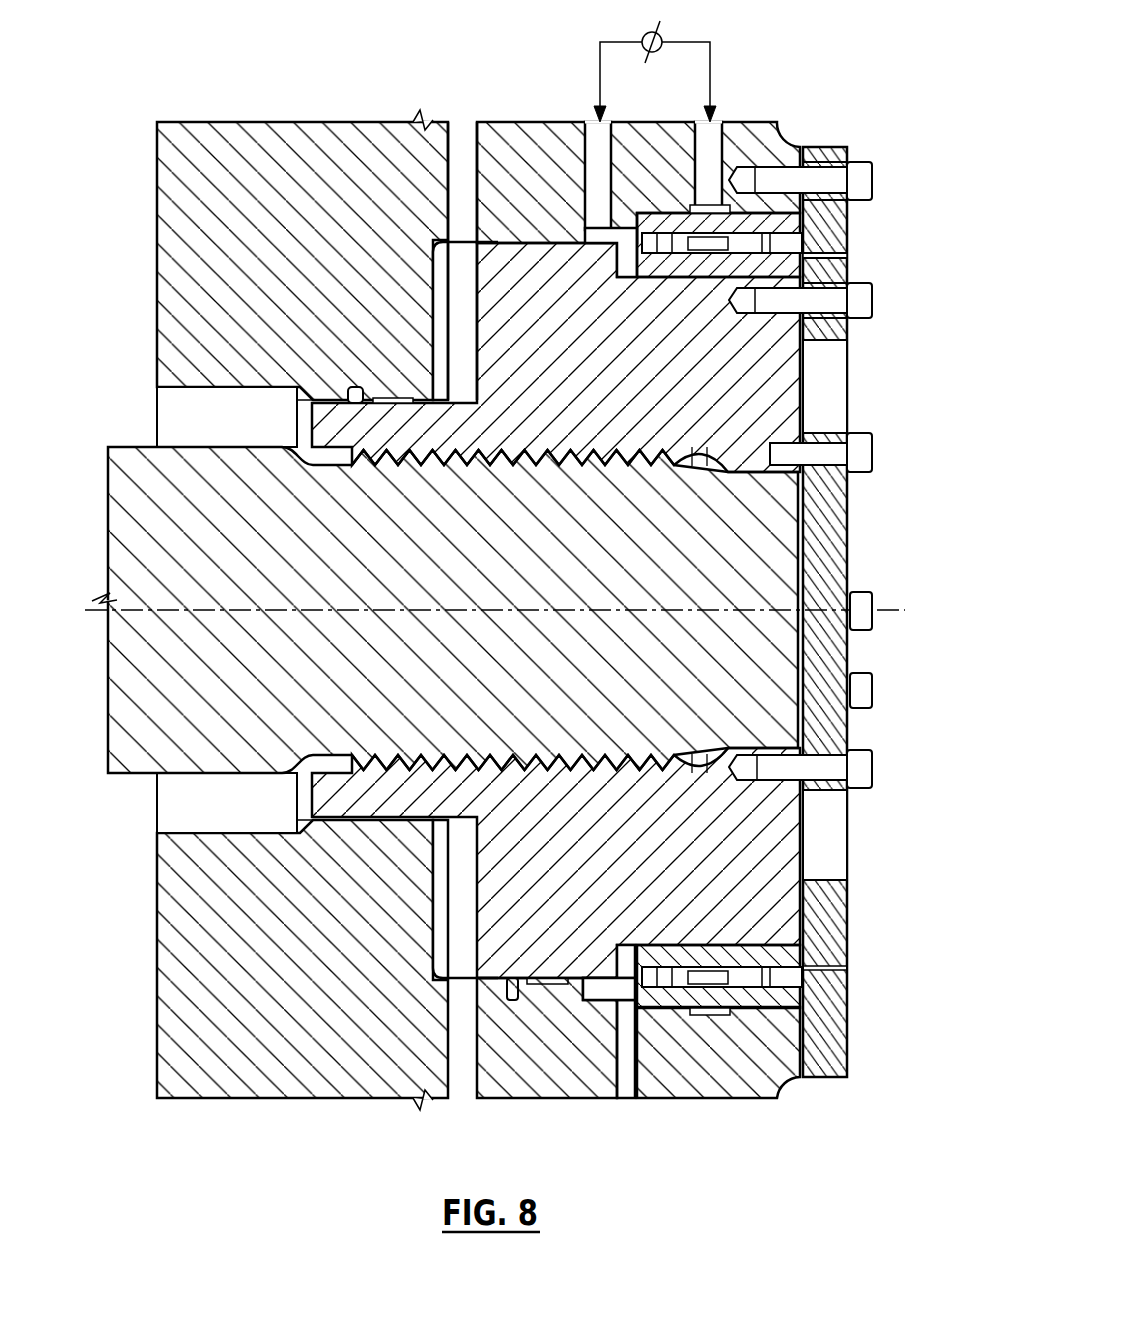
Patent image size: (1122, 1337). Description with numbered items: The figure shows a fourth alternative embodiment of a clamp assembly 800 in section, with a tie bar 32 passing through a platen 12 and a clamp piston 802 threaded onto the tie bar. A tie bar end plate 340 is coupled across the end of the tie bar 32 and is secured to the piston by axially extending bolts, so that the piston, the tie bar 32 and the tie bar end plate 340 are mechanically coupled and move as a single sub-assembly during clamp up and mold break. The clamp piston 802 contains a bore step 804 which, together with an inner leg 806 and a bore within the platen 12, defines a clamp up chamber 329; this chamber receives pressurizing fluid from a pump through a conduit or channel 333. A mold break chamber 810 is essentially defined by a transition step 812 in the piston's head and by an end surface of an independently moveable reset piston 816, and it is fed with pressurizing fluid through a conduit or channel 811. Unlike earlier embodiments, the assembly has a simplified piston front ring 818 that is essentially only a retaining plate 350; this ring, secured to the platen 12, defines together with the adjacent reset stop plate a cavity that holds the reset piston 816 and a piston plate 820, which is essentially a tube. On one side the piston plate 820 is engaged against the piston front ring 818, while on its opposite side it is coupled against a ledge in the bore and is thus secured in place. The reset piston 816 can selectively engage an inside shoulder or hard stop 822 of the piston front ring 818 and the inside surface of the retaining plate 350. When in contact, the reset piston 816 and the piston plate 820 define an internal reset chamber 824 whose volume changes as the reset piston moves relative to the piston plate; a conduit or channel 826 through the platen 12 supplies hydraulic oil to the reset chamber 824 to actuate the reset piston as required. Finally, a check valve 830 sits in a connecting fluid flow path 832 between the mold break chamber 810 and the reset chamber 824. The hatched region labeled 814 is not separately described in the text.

The clamp assembly 800 is at (496, 587).
The platen 12 is at (282, 1082).
The tie bar 32 is at (130, 638).
The clamp up chamber 329 is at (462, 282).
The conduit or channel 333 is at (453, 157).
The tie bar end plate 340 is at (833, 587).
The retaining plate 350 is at (828, 330).
The clamp piston 802 is at (545, 425).
The bore step 804 is at (436, 308).
The inner leg 806 is at (388, 442).
The mold break chamber 810 is at (628, 237).
The conduit or channel 811 is at (592, 152).
The transition step 812 is at (612, 970).
The upper gland body 814 is at (644, 595).
The reset piston 816 is at (778, 266).
The piston front ring 818 is at (830, 157).
The piston plate 820 is at (680, 270).
The inside shoulder 822 is at (800, 243).
The reset chamber 824 is at (715, 978).
The conduit or channel 826 is at (712, 158).
The check valve 830 is at (663, 40).
The connecting fluid flow path 832 is at (647, 61).